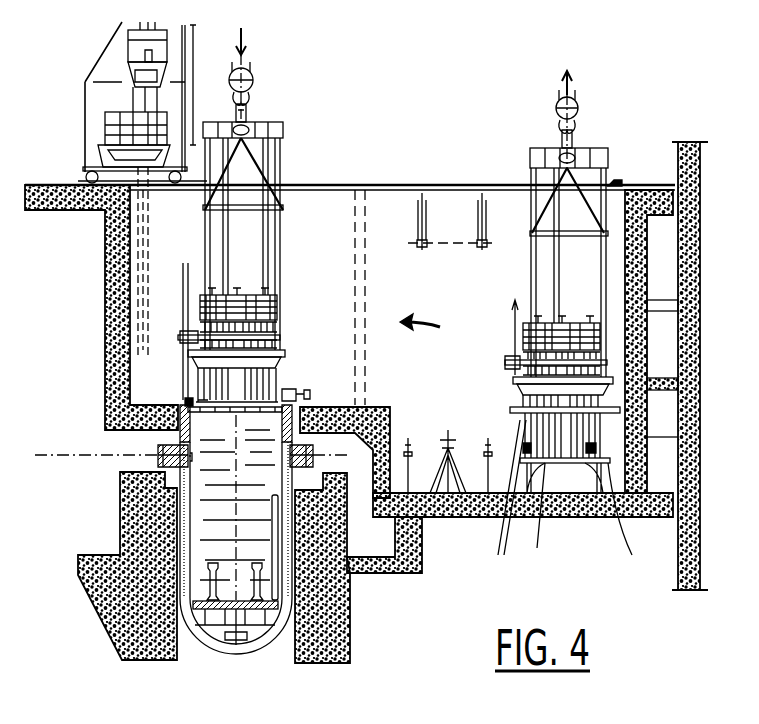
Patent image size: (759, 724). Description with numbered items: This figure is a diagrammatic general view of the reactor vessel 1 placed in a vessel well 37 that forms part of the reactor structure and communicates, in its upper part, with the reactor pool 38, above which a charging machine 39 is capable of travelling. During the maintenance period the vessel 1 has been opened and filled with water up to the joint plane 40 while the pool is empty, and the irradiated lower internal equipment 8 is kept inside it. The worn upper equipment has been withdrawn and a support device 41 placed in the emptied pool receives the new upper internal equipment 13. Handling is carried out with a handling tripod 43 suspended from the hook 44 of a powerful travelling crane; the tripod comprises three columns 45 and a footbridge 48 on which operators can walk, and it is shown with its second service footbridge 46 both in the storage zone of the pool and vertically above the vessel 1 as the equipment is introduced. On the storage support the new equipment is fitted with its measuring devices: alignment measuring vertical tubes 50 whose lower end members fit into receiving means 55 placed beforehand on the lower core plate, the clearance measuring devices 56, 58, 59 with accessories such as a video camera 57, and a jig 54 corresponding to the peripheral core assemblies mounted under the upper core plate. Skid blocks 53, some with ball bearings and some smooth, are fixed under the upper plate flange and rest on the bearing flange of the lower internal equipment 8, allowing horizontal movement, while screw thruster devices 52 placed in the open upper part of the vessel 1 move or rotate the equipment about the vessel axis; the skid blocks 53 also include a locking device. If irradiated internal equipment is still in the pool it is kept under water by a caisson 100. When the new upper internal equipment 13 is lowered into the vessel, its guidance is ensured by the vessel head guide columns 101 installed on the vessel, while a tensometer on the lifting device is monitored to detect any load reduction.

The reactor vessel 1 is at (260, 647).
The lower internal equipment 8 is at (205, 513).
The upper internal equipment 13 is at (283, 386).
The vessel well 37 is at (175, 645).
The reactor pool 38 is at (145, 377).
The charging machine 39 is at (85, 115).
The joint plane 40 is at (214, 410).
The support device 41 is at (508, 502).
The handling tripod 43 is at (625, 174).
The hook 44 is at (578, 108).
The columns 45 is at (280, 252).
The second service footbridge 46 is at (278, 328).
The footbridge 48 is at (533, 160).
The vertical tubes 50 is at (250, 318).
The screw thruster devices 52 is at (310, 393).
The skid blocks 53 is at (284, 357).
The jig 54 is at (565, 505).
The receiving means 55 is at (265, 582).
The clearance measuring device 56 is at (647, 362).
The video camera 57 is at (539, 518).
The clearance measuring device 58 is at (597, 453).
The clearance measuring device 59 is at (633, 521).
The caisson 100 is at (366, 200).
The vessel head guide columns 101 is at (185, 275).